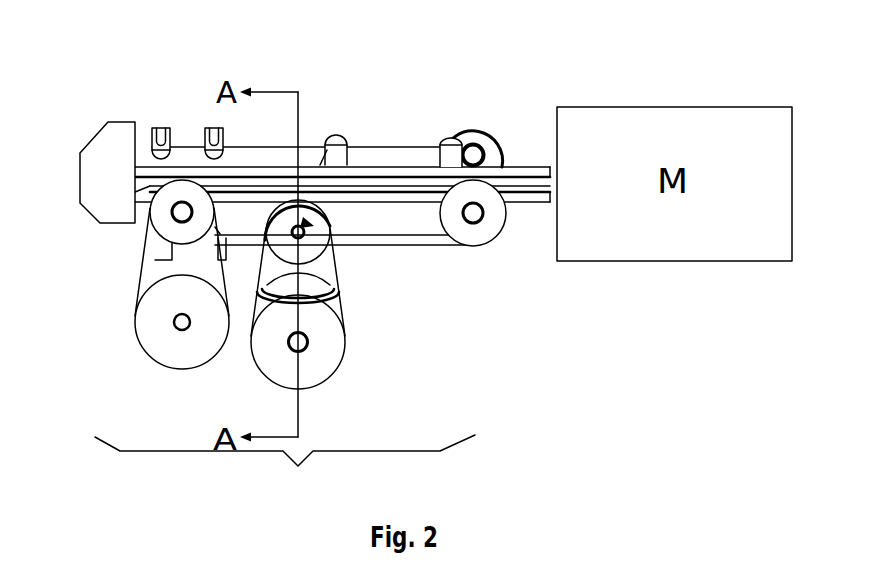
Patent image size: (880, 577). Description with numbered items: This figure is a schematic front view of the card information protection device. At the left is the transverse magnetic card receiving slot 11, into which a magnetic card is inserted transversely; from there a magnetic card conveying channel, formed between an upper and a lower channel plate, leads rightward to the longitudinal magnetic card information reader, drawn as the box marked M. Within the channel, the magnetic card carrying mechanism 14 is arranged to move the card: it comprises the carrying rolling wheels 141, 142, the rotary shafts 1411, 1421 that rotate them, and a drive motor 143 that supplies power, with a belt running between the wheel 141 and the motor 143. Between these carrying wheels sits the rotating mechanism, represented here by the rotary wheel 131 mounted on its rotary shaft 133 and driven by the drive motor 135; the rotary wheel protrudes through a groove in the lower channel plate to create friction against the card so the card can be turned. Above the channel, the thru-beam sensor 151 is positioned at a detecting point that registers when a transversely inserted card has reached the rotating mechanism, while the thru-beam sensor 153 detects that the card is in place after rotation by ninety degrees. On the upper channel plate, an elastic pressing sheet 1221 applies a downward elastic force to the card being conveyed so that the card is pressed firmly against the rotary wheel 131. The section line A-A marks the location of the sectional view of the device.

The transverse magnetic card receiving slot 11 is at (105, 177).
The thru-beam sensor 153 is at (162, 128).
The thru-beam sensor 151 is at (212, 128).
The elastic pressing sheet 1221 is at (415, 147).
The rotary shaft 133 is at (298, 226).
The rotary wheel 131 is at (277, 210).
The drive motor 135 is at (310, 323).
The carrying rolling wheel 141 is at (171, 232).
The rotary shaft 1411 is at (184, 215).
The drive motor 143 is at (165, 325).
The carrying rolling wheel 142 is at (477, 232).
The rotary shaft 1421 is at (467, 223).
The magnetic card carrying mechanism 14 is at (285, 470).